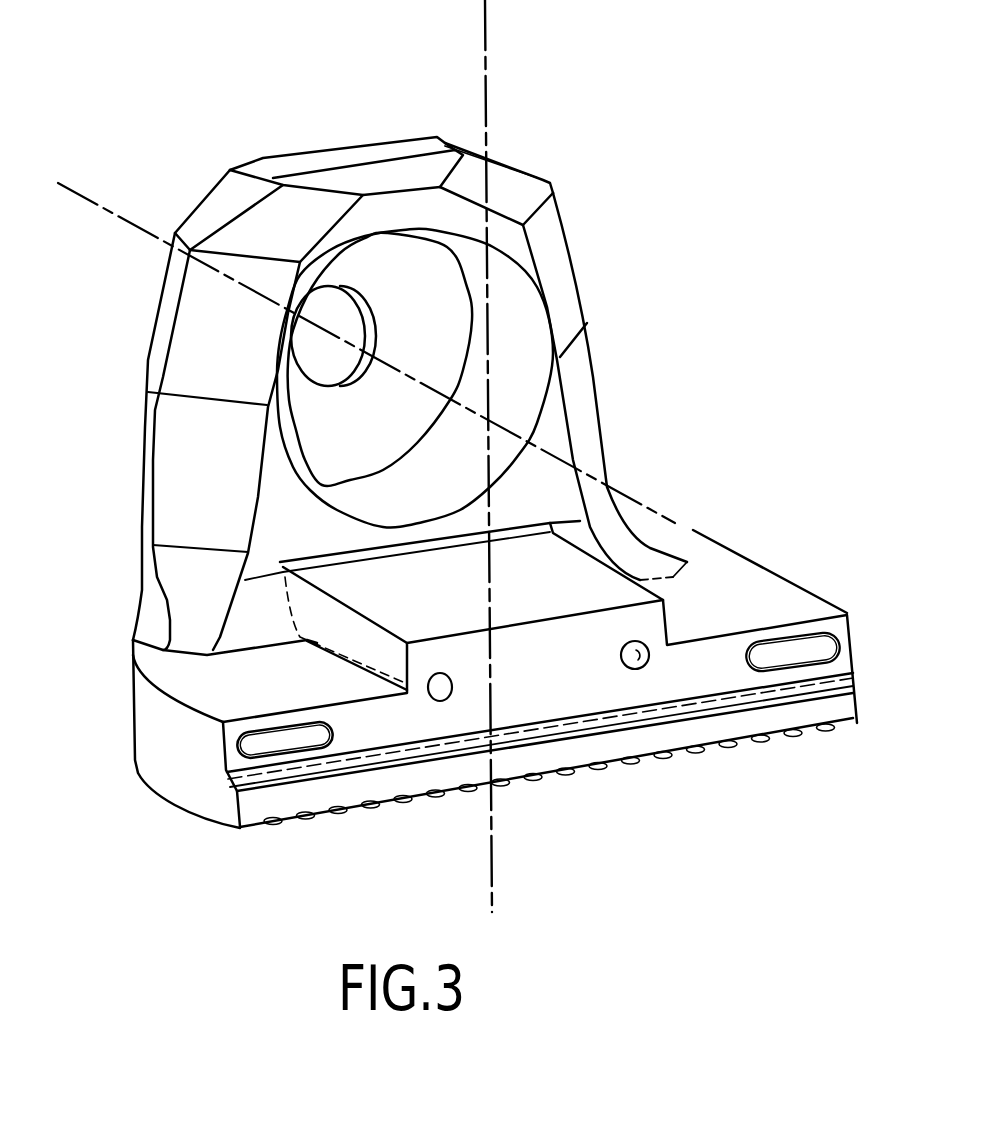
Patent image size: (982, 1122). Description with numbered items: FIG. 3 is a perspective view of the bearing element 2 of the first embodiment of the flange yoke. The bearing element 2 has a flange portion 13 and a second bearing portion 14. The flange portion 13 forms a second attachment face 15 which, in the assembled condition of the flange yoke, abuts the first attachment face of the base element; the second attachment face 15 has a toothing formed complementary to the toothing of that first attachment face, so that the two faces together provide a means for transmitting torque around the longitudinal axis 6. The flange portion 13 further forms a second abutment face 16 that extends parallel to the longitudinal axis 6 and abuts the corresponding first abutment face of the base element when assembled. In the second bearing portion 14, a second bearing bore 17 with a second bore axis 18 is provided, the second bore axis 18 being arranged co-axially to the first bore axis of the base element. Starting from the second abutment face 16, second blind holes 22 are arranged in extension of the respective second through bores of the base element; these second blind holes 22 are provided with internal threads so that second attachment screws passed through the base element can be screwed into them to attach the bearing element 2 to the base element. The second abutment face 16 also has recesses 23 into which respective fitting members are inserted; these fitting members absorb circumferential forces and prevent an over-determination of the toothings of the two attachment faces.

The bearing element 2 is at (376, 108).
The longitudinal axis 6 is at (485, 12).
The flange portion 13 is at (495, 701).
The second bearing portion 14 is at (155, 334).
The second attachment face 15 is at (358, 813).
The second abutment face 16 is at (452, 653).
The second bearing bore 17 is at (420, 520).
The second bore axis 18 is at (93, 200).
The second blind hole 22 is at (628, 656).
The recess 23 is at (772, 652).